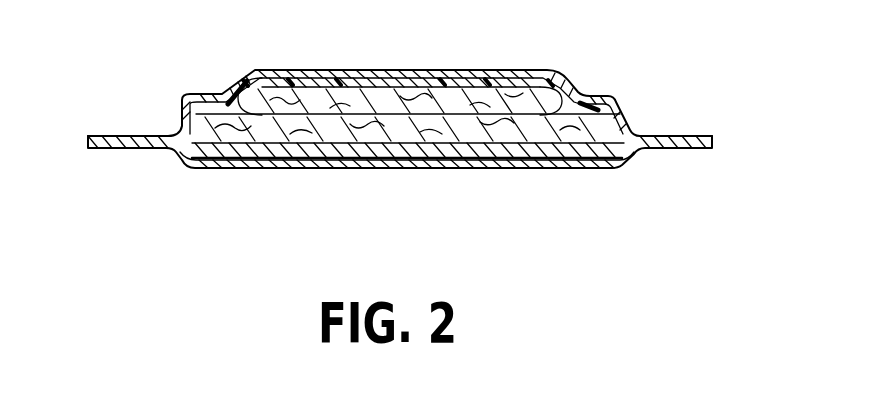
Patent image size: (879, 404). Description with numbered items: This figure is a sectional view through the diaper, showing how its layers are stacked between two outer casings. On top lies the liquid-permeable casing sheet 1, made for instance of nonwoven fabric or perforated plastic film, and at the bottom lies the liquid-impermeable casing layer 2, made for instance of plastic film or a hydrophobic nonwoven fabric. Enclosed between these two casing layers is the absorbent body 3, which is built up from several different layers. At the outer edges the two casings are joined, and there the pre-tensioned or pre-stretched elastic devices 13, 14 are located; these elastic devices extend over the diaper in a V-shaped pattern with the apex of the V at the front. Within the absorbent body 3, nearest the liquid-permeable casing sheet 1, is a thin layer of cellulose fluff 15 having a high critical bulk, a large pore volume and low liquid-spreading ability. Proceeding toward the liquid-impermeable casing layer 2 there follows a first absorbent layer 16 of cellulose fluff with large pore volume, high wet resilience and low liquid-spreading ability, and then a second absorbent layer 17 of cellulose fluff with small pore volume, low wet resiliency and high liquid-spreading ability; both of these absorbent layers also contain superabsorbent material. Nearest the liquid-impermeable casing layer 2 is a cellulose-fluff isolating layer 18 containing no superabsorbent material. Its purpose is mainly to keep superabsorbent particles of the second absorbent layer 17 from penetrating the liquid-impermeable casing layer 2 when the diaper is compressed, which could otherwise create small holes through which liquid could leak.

The liquid-permeable casing sheet 1 is at (524, 82).
The liquid-impermeable casing layer 2 is at (534, 169).
The absorbent body 3 is at (466, 107).
The elastic device 13 is at (120, 134).
The elastic device 14 is at (685, 134).
The thin layer of cellulose fluff 15 is at (318, 76).
The first absorbent layer 16 is at (385, 108).
The second absorbent layer 17 is at (240, 117).
The cellulose-fluff isolating layer 18 is at (311, 152).